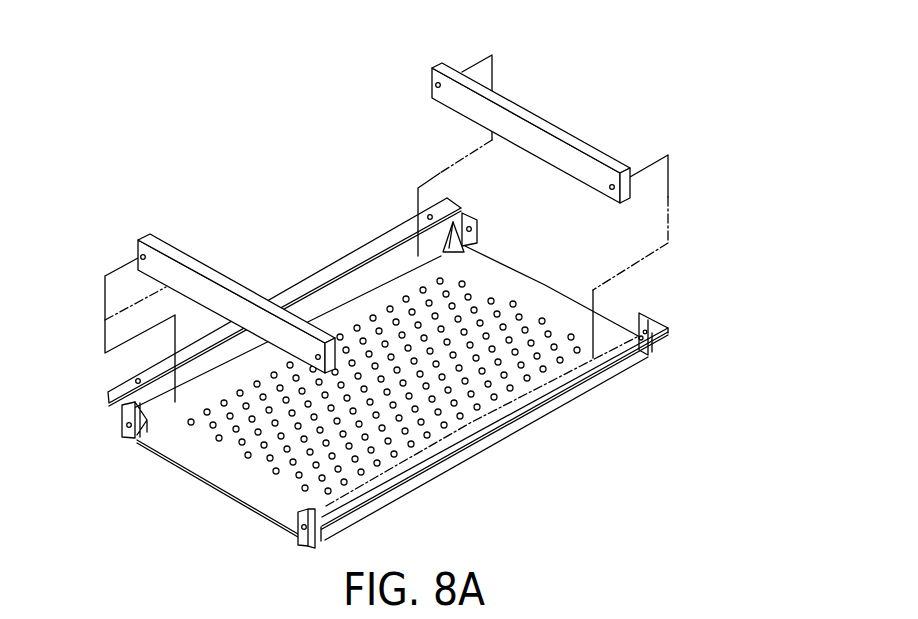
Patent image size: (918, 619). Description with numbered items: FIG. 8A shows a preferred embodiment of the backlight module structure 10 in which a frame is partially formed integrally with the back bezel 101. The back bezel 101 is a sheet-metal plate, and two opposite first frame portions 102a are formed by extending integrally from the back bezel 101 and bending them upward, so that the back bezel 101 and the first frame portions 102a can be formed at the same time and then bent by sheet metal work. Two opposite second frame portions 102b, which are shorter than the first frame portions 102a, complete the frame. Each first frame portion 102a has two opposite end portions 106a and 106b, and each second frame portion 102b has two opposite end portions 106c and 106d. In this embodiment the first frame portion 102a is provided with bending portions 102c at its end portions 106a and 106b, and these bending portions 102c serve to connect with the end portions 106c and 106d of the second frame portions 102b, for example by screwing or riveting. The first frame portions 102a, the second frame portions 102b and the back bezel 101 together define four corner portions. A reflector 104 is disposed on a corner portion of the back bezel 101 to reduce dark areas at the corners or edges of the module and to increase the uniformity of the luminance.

The tray assembly 10 is at (359, 304).
The back bezel 101 is at (218, 468).
The first frame portion 102a is at (376, 274).
The second frame portion 102b is at (170, 254).
The bending portion 102c is at (124, 425).
The reflector 104 is at (466, 251).
The end portion 106a is at (318, 532).
The end portion 106b is at (655, 343).
The end portion 106c is at (328, 346).
The end portion 106d is at (142, 253).